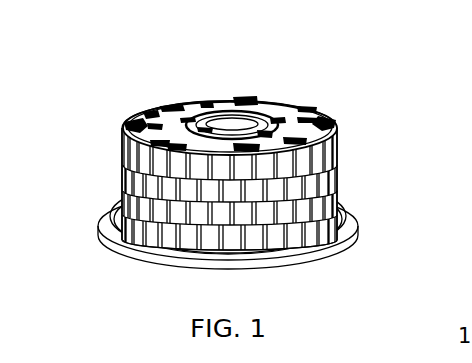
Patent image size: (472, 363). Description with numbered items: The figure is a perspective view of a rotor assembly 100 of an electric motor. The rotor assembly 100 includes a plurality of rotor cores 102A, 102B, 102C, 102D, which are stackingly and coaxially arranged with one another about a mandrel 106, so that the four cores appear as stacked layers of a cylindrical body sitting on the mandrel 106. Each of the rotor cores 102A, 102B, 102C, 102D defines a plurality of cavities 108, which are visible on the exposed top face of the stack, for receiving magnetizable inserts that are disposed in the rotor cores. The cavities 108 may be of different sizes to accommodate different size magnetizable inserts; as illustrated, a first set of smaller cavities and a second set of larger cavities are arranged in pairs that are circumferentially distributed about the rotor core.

The rotor assembly 100 is at (155, 45).
The rotor core 102A is at (122, 138).
The rotor core 102B is at (122, 163).
The rotor core 102C is at (122, 189).
The rotor core 102D is at (110, 212).
The mandrel 106 is at (353, 233).
The cavities 108 is at (253, 99).